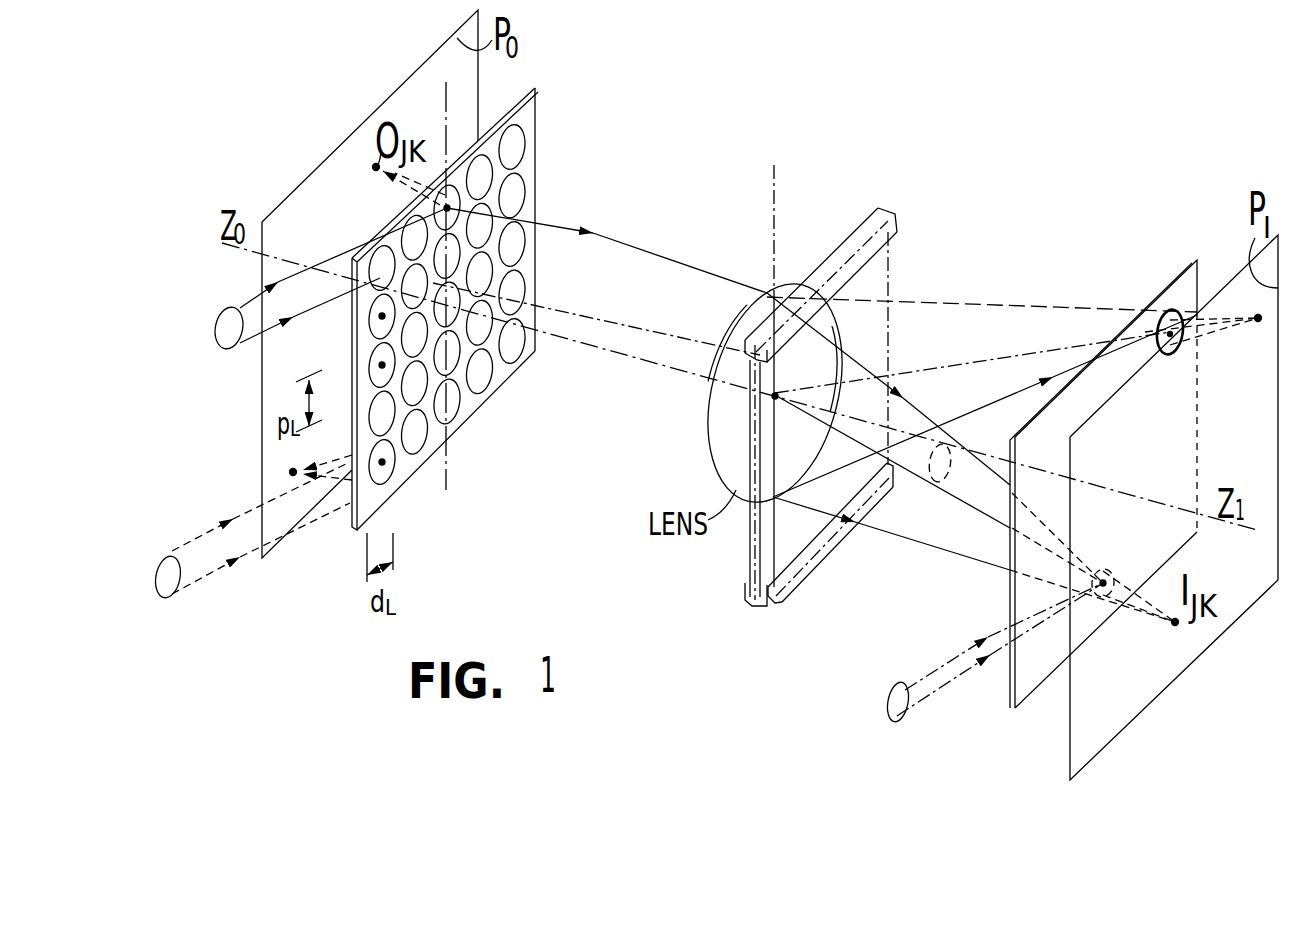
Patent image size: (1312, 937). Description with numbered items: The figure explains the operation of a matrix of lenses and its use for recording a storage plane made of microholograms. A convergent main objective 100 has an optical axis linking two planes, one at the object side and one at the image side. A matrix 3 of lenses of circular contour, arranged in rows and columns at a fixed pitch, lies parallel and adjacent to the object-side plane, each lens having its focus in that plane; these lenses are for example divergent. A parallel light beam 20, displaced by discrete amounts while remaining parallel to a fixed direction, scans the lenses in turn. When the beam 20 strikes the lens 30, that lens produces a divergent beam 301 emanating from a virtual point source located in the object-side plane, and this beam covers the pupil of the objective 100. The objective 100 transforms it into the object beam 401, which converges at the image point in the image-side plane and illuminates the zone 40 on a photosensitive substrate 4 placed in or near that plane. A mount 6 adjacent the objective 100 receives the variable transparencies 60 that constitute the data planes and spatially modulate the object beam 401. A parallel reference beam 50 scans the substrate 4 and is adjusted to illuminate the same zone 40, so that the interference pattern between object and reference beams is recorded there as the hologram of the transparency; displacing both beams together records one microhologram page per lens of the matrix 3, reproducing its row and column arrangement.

The matrix of lenses 3 is at (537, 113).
The lens 30 is at (462, 286).
The divergent beam 301 is at (656, 256).
The parallel light beam 20 is at (243, 342).
The mount 6 is at (878, 208).
The variable transparencies 60 is at (882, 260).
The convergent objective 100 is at (826, 329).
The object beam 401 is at (905, 522).
The photosensitive substrate 4 is at (1166, 301).
The zone 40 is at (1110, 567).
The reference beam 50 is at (952, 652).